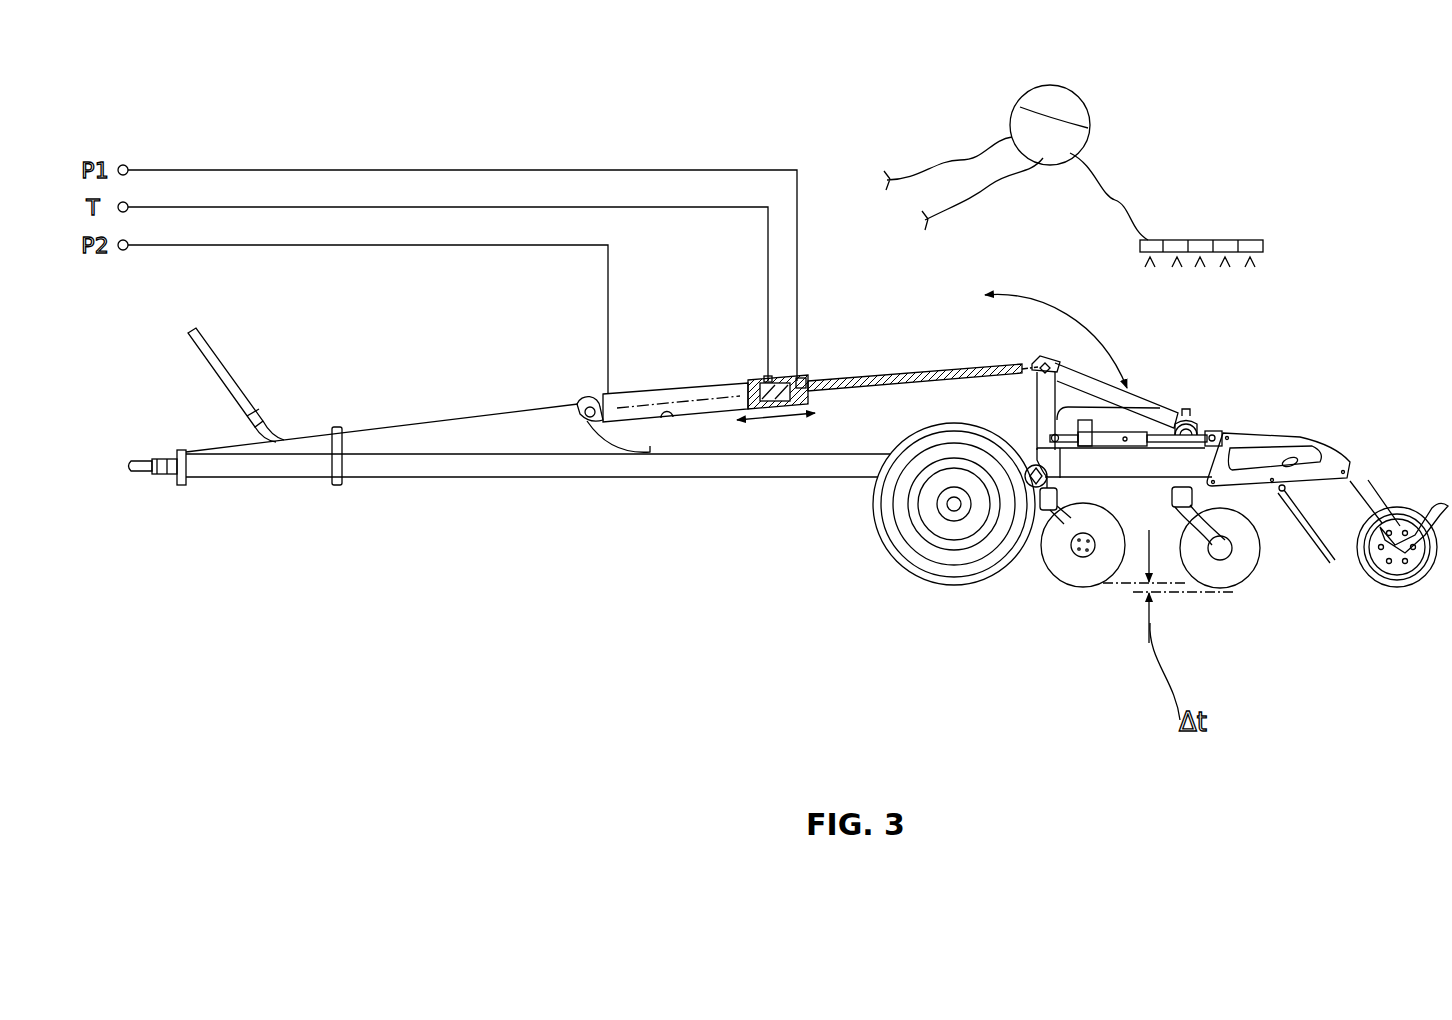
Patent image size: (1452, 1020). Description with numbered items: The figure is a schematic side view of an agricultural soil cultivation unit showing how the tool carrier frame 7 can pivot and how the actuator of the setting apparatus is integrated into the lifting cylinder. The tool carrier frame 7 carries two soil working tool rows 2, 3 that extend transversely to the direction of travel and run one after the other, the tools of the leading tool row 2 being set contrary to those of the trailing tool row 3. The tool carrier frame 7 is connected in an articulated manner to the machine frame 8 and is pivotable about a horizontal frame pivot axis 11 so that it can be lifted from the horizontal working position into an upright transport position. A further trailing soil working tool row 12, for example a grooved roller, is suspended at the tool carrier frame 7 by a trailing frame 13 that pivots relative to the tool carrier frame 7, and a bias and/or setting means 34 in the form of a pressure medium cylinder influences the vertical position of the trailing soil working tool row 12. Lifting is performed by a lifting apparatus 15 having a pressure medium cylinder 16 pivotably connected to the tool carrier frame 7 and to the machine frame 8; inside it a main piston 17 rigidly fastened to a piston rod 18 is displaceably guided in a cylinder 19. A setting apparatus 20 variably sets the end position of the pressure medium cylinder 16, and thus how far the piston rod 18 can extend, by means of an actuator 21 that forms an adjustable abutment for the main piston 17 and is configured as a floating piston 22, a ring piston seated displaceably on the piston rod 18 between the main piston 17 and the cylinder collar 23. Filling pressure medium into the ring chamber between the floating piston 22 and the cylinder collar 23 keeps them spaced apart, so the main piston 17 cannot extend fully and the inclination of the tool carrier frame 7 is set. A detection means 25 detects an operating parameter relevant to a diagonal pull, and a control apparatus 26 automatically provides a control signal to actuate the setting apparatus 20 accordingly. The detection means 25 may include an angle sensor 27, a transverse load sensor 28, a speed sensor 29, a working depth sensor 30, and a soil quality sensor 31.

The leading soil working tool row 2 is at (1097, 594).
The trailing soil working tool row 3 is at (1235, 601).
The tool carrier frame 7 is at (1165, 412).
The machine frame 8 is at (770, 462).
The frame pivot axis 11 is at (1031, 484).
The trailing soil working tool row 12 is at (1413, 588).
The trailing frame 13 is at (1327, 450).
The lifting apparatus 15 is at (807, 400).
The pressure medium cylinder 16 is at (647, 386).
The main piston 17 is at (757, 381).
The piston rod 18 is at (937, 373).
The cylinder 19 is at (667, 419).
The setting apparatus 20 is at (1044, 140).
The actuator 21 is at (777, 367).
The floating piston 22 is at (787, 381).
The cylinder collar 23 is at (803, 382).
The detection means 25 is at (1164, 238).
The control apparatus 26 is at (1073, 110).
The angle sensor 27 is at (1198, 211).
The transverse load sensor 28 is at (1200, 240).
The speed sensor 29 is at (1228, 240).
The working depth sensor 30 is at (1257, 241).
The soil quality sensor 31 is at (1265, 247).
The bias and/or setting means 34 is at (1113, 439).